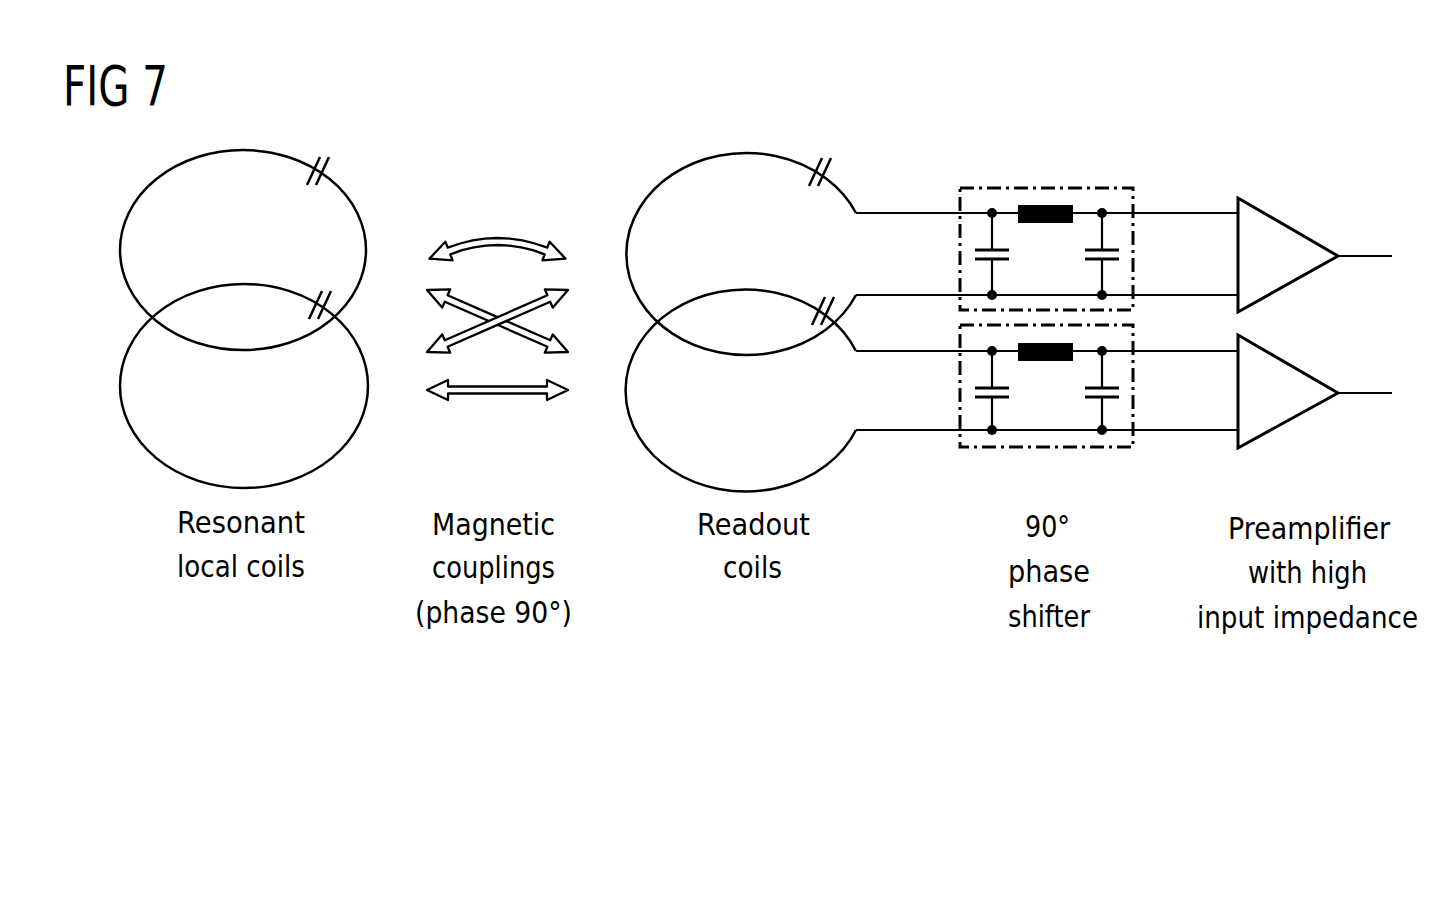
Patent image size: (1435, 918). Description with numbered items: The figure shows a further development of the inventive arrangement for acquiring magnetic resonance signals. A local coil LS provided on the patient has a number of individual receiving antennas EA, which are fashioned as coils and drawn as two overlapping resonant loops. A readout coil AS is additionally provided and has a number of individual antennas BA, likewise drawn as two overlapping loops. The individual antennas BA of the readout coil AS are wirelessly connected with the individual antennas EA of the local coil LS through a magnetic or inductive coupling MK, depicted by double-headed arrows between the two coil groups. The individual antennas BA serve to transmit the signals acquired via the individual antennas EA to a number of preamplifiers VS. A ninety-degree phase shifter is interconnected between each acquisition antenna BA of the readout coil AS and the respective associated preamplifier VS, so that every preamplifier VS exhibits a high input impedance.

The local coil LS is at (215, 319).
The individual receiving antenna EA is at (244, 319).
The magnetic or inductive coupling MK is at (497, 294).
The readout coil AS is at (741, 299).
The individual antenna BA is at (741, 322).
The preamplifier VS is at (1315, 312).